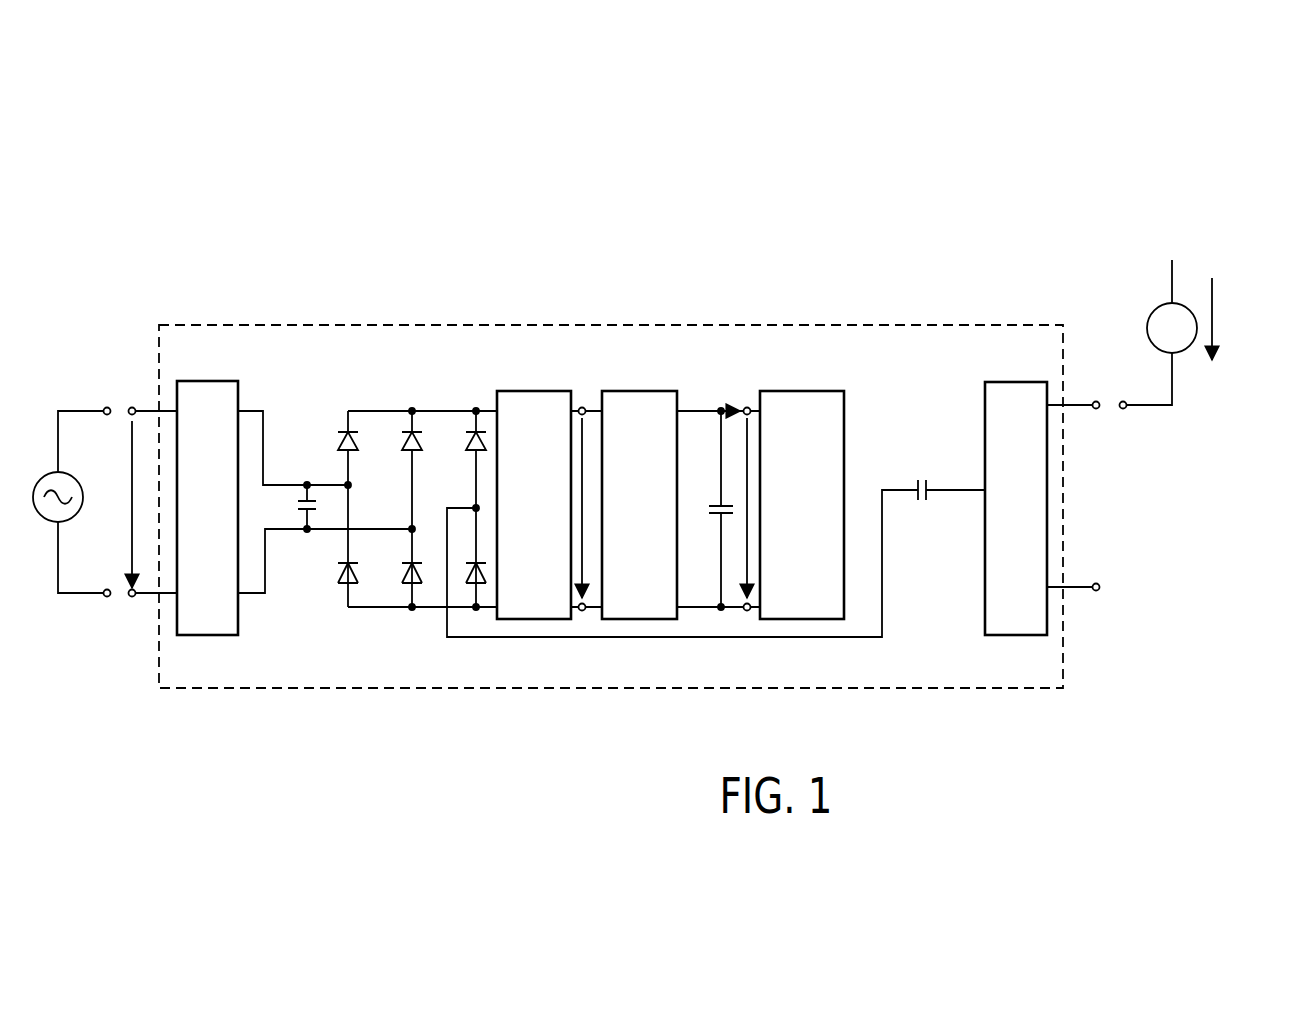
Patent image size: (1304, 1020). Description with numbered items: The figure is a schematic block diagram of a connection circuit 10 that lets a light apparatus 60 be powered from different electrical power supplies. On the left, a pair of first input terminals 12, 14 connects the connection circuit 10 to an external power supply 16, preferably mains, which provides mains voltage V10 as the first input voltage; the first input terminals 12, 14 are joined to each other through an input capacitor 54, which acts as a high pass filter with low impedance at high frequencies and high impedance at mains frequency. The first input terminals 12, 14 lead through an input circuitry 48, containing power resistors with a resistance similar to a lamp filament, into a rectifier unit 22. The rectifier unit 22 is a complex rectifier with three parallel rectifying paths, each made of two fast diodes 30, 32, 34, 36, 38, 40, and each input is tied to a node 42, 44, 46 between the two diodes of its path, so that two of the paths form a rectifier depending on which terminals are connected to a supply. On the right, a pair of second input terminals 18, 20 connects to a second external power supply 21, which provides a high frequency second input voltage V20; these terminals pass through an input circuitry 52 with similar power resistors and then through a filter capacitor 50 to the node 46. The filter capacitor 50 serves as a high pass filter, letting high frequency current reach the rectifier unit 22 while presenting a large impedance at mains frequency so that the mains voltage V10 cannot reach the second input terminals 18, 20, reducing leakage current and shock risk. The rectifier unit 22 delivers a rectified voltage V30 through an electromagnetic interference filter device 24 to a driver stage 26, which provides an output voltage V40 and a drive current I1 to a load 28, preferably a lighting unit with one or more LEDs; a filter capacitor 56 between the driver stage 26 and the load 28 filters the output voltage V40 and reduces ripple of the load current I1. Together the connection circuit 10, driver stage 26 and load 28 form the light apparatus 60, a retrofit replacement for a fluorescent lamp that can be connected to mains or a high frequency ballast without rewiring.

The connection circuit 10 is at (233, 238).
The first input terminal 12 is at (146, 407).
The first input terminal 14 is at (146, 598).
The external power supply 16 is at (70, 515).
The second input terminal 18 is at (1091, 402).
The second input terminal 20 is at (1079, 592).
The second external power supply 21 is at (1178, 306).
The rectifier unit 22 is at (392, 636).
The electromagnetic interference filter device 24 is at (545, 402).
The driver stage 26 is at (643, 402).
The load 28 is at (808, 402).
The diode 30 is at (344, 450).
The diode 32 is at (343, 575).
The diode 34 is at (408, 450).
The diode 36 is at (408, 574).
The diode 38 is at (470, 446).
The diode 40 is at (468, 584).
The node 42 is at (352, 487).
The node 44 is at (414, 527).
The node 46 is at (474, 506).
The input circuitry 48 is at (212, 403).
The filter capacitor 50 is at (916, 484).
The input circuitry 52 is at (1012, 620).
The input capacitor 54 is at (300, 506).
The filter capacitor 56 is at (719, 505).
The light apparatus 60 is at (976, 290).
The mains voltage V10 is at (109, 504).
The second input voltage V20 is at (1236, 319).
The rectified voltage V30 is at (585, 432).
The output voltage V40 is at (748, 432).
The drive current I1 is at (726, 392).